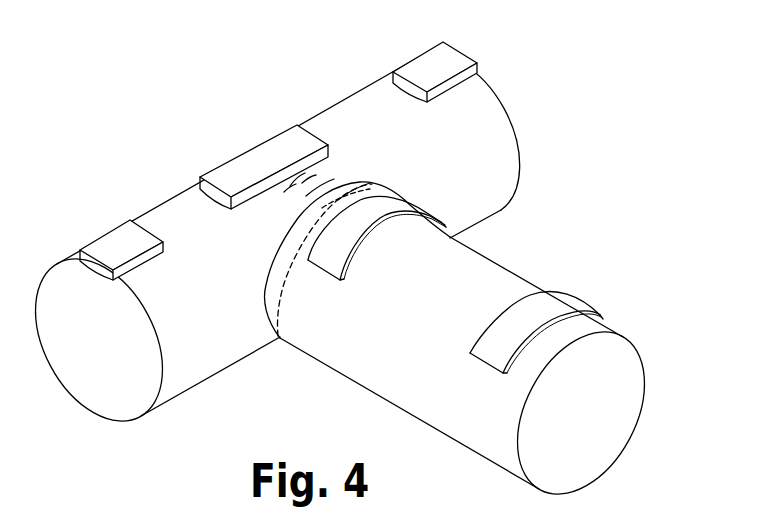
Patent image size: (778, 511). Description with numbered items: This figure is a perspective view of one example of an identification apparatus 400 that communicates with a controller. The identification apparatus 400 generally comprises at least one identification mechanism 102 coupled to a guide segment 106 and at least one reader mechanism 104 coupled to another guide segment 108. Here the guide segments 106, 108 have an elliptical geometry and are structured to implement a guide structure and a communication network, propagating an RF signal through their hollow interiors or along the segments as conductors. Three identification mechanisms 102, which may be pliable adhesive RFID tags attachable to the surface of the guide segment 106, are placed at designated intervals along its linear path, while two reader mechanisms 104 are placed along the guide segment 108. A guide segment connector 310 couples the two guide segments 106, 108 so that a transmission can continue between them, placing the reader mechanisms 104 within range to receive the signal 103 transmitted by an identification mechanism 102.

The identification apparatus 400 is at (340, 255).
The identification mechanism 102 is at (115, 245).
The signal 103 is at (351, 200).
The reader mechanism 104 is at (400, 212).
The guide segment 106 is at (187, 393).
The guide segment 108 is at (428, 428).
The guide segment connector 310 is at (278, 313).